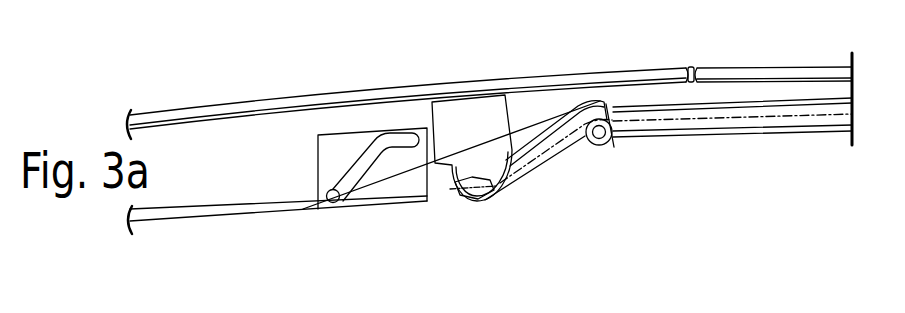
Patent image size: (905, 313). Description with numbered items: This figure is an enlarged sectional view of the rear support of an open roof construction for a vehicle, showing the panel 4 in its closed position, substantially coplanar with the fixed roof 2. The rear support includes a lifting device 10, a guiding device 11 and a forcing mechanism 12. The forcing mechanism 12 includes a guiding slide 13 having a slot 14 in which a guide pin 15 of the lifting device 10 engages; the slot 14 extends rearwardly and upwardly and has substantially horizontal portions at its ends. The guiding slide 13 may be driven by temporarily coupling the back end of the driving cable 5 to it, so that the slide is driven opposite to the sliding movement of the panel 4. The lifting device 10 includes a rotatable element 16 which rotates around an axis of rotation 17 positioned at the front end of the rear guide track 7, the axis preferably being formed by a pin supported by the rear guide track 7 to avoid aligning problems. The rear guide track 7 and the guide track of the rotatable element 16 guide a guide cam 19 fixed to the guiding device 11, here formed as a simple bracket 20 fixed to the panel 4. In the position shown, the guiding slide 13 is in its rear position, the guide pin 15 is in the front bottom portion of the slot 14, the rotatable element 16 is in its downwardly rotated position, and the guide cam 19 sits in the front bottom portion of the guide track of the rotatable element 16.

The fixed roof 2 is at (765, 66).
The panel 4 is at (258, 106).
The driving cable 5 is at (215, 218).
The rear guide track 7 is at (812, 117).
The lifting device 10 is at (528, 196).
The guiding device 11 is at (490, 97).
The forcing mechanism 12 is at (308, 221).
The guiding slide 13 is at (410, 170).
The slot 14 is at (376, 165).
The guide pin 15 is at (333, 203).
The rotatable element 16 is at (438, 186).
The axis of rotation 17 is at (610, 146).
The guide cam 19 is at (462, 197).
The bracket 20 is at (465, 130).